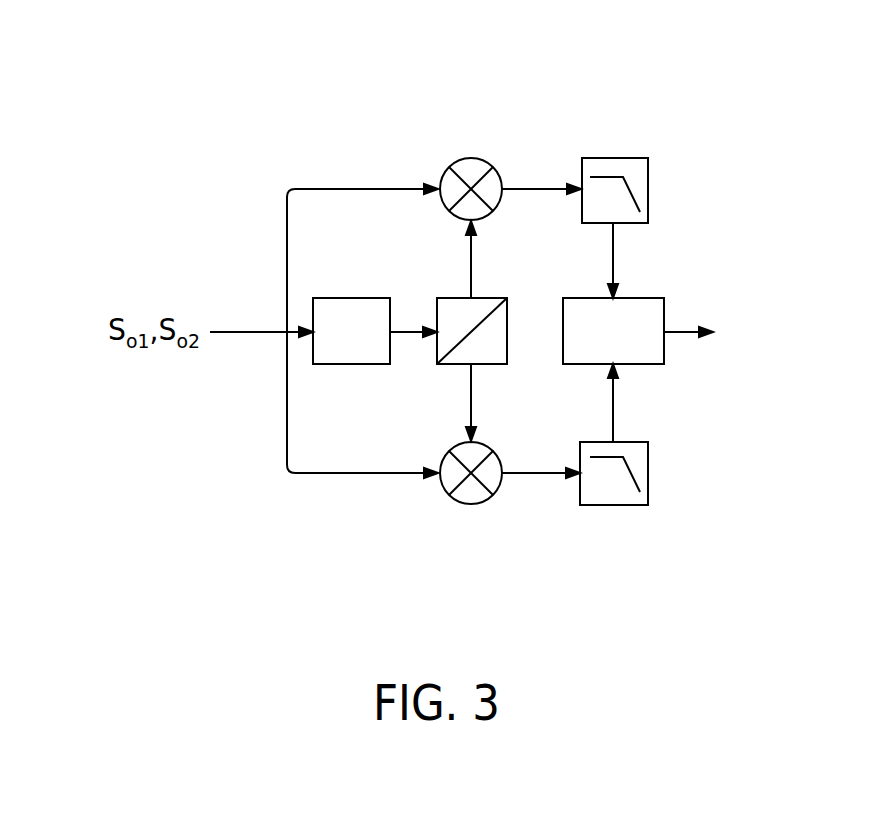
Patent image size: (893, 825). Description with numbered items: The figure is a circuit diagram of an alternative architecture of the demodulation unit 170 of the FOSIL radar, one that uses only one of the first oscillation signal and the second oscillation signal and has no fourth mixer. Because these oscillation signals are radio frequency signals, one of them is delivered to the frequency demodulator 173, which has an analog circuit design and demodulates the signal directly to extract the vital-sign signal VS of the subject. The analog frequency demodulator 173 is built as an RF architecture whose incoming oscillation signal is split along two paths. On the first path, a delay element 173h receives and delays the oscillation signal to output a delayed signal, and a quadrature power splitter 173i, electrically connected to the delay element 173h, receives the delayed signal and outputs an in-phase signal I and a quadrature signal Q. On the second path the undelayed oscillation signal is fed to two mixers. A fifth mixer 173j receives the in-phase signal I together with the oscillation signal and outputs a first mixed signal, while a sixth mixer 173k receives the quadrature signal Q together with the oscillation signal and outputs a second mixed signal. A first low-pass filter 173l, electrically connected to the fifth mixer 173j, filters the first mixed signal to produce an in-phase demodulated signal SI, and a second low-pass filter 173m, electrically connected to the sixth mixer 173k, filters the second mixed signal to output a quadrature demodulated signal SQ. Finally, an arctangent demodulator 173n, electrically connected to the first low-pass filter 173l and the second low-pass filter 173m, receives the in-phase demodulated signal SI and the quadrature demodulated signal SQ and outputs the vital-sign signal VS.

The demodulation unit 170 is at (139, 128).
The frequency demodulator 173 is at (328, 138).
The delay element 173h is at (352, 298).
The quadrature power splitter 173i is at (452, 364).
The fifth mixer 173j is at (470, 158).
The sixth mixer 173k is at (470, 505).
The first low-pass filter 173l is at (613, 158).
The second low-pass filter 173m is at (613, 505).
The arctangent demodulator 173n is at (575, 298).